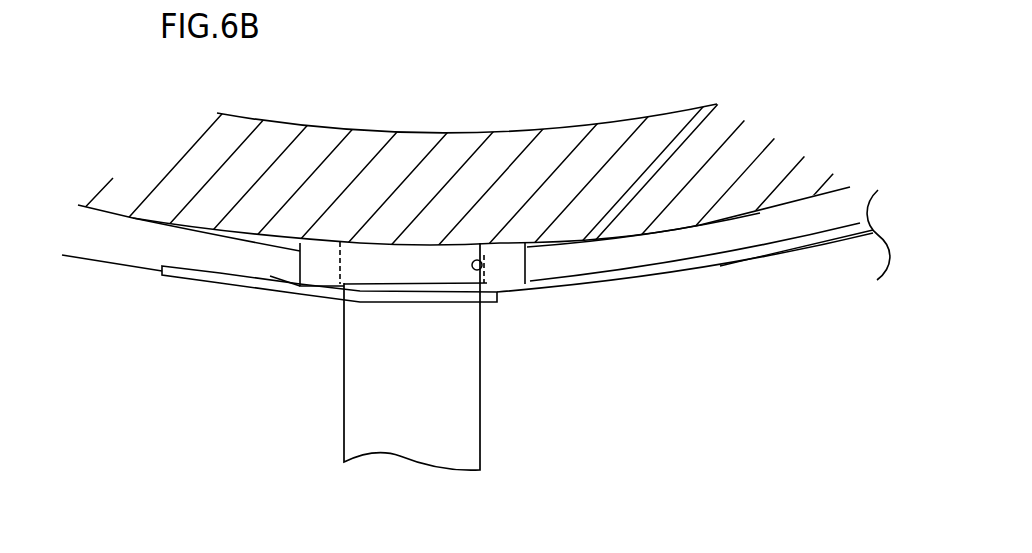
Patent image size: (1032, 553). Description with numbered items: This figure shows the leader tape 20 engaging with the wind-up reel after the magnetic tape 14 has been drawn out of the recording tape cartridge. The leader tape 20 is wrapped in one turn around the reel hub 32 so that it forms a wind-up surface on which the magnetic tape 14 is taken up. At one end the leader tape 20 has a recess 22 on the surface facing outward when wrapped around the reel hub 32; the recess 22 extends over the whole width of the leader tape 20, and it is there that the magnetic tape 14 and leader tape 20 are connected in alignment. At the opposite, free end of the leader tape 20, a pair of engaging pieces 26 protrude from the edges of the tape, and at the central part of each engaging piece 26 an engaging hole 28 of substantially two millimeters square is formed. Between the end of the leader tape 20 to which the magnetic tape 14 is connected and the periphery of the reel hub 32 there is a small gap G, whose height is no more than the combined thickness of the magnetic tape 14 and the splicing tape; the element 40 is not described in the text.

The reel hub 32 is at (514, 138).
The magnetic tape 14 is at (823, 241).
The leader tape 20 is at (103, 260).
The recess 22 is at (238, 274).
The gap G is at (277, 247).
The engaging pieces 26 is at (523, 261).
The engaging hole 28 is at (483, 262).
The stem 40 is at (469, 421).